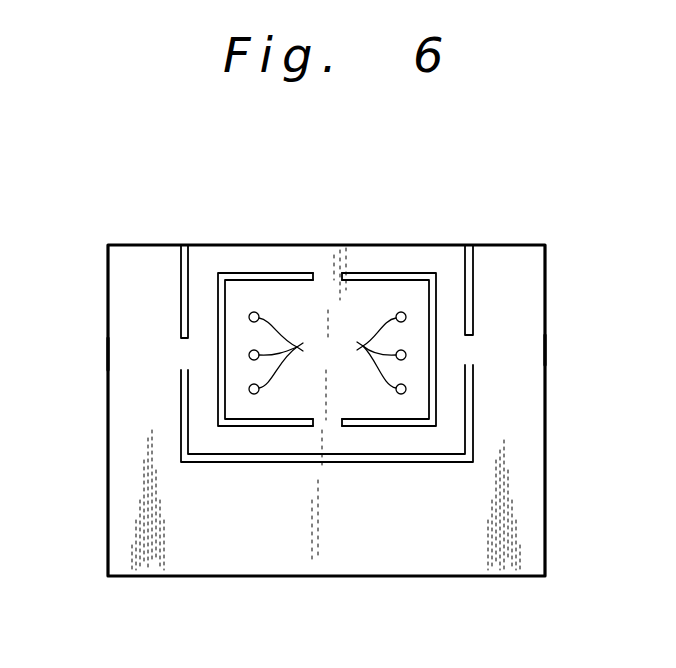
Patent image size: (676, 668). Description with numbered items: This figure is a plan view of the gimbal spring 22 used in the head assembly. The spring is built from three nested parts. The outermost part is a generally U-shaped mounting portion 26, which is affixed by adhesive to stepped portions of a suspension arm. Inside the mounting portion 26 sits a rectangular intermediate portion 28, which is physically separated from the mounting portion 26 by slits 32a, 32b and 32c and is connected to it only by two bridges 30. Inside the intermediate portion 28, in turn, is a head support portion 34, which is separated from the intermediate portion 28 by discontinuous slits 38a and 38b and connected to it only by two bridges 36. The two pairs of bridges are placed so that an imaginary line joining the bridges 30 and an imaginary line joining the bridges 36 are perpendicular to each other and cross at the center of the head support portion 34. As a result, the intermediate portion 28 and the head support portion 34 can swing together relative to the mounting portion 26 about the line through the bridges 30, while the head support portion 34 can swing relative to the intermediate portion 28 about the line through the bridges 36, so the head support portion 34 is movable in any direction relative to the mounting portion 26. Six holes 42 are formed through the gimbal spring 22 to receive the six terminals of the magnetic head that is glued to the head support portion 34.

The gimbal spring 22 is at (564, 272).
The mounting portion 26 is at (528, 527).
The intermediate portion 28 is at (450, 433).
The bridges 30 is at (180, 354).
The slit 32a is at (468, 283).
The slit 32b is at (418, 461).
The slit 32c is at (180, 290).
The head support portion 34 is at (280, 405).
The bridges 36 is at (328, 266).
The discontinuous slit 38a is at (437, 313).
The discontinuous slit 38b is at (222, 402).
The holes 42 is at (327, 353).